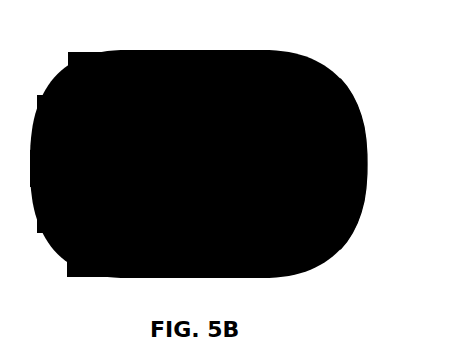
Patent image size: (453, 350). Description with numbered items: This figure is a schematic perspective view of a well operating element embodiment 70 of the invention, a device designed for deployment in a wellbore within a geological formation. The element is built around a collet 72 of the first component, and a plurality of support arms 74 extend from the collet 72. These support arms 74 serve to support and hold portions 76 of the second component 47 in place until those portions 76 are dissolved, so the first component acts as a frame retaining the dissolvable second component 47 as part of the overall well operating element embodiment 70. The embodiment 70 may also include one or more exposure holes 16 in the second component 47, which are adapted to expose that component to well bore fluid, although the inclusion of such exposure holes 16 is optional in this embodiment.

The well operating element embodiment 70 is at (360, 66).
The exposure hole 16 is at (336, 247).
The second component 47 is at (362, 117).
The collet 72 is at (196, 51).
The support arms 74 is at (103, 53).
The portions of second component 76 is at (40, 107).